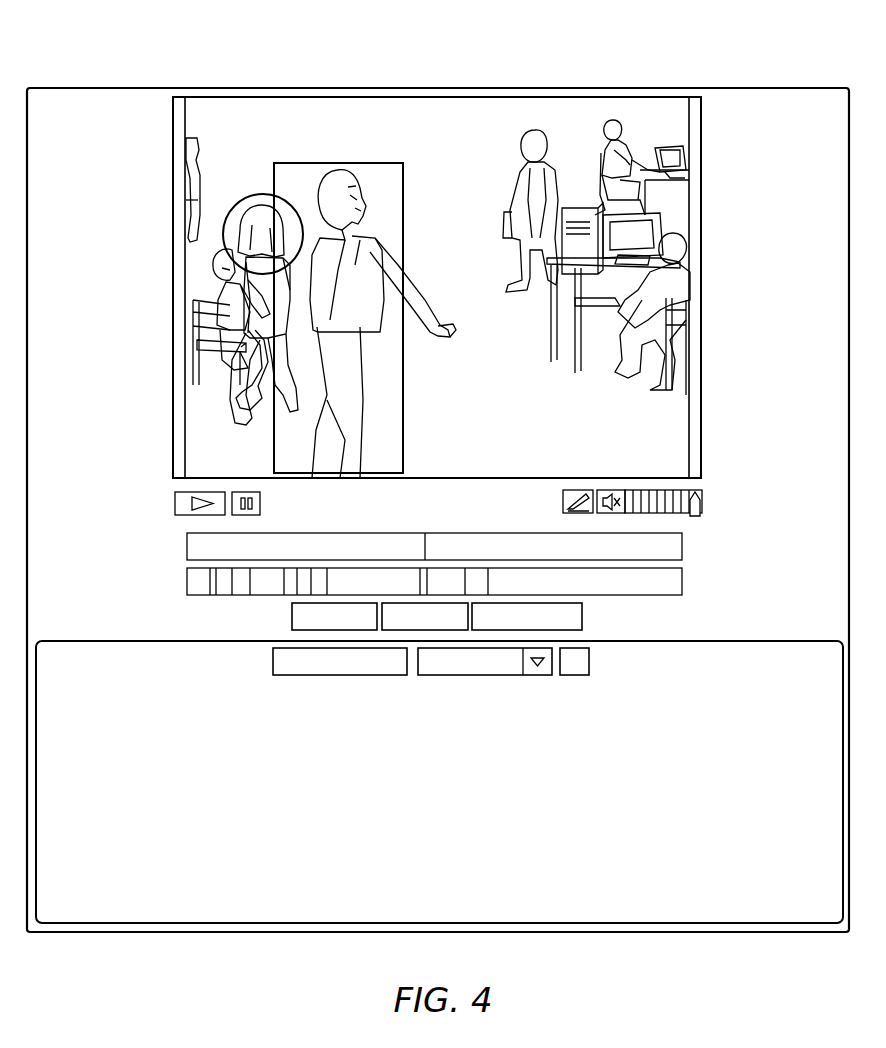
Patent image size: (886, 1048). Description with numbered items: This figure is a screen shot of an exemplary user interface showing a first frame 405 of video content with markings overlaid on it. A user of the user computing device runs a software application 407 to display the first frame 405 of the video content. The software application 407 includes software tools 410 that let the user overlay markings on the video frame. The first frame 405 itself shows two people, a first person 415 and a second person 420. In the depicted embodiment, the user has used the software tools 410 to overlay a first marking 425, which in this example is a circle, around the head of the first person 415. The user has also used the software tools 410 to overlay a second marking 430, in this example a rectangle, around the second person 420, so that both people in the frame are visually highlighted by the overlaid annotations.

The first frame 405 is at (703, 127).
The software application 407 is at (130, 892).
The software tools 410 is at (703, 483).
The first person 415 is at (262, 205).
The second person 420 is at (340, 170).
The first marking 425 is at (237, 202).
The second marking 430 is at (288, 163).